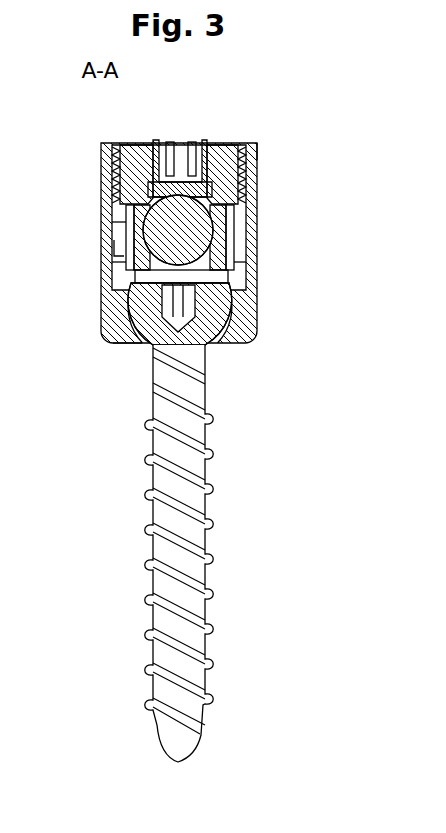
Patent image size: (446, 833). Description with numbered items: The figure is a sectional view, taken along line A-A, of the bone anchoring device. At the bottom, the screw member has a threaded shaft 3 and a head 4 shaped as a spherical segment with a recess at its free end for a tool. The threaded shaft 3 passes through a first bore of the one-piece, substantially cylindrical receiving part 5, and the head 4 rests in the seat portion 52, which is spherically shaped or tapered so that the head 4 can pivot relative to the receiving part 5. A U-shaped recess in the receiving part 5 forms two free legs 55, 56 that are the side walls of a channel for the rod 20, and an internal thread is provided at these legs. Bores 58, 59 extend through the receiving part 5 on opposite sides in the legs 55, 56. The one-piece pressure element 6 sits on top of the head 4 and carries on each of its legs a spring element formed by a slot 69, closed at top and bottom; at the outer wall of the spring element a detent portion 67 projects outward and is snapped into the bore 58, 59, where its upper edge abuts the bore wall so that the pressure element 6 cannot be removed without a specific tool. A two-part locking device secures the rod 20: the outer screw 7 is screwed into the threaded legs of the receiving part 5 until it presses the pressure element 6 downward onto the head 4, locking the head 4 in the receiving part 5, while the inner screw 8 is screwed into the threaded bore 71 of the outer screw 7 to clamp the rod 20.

The threaded shaft 3 is at (213, 437).
The head 4 is at (216, 346).
The receiving part 5 is at (262, 146).
The pressure element 6 is at (105, 300).
The outer screw 7 is at (124, 145).
The inner screw 8 is at (153, 143).
The rod 20 is at (242, 224).
The seat portion 52 is at (137, 343).
The free leg 55 is at (110, 152).
The free leg 56 is at (257, 157).
The bore 58 is at (113, 262).
The bore 59 is at (258, 258).
The detent portion 67 is at (102, 228).
The slot 69 is at (113, 248).
The threaded bore 71 is at (226, 143).